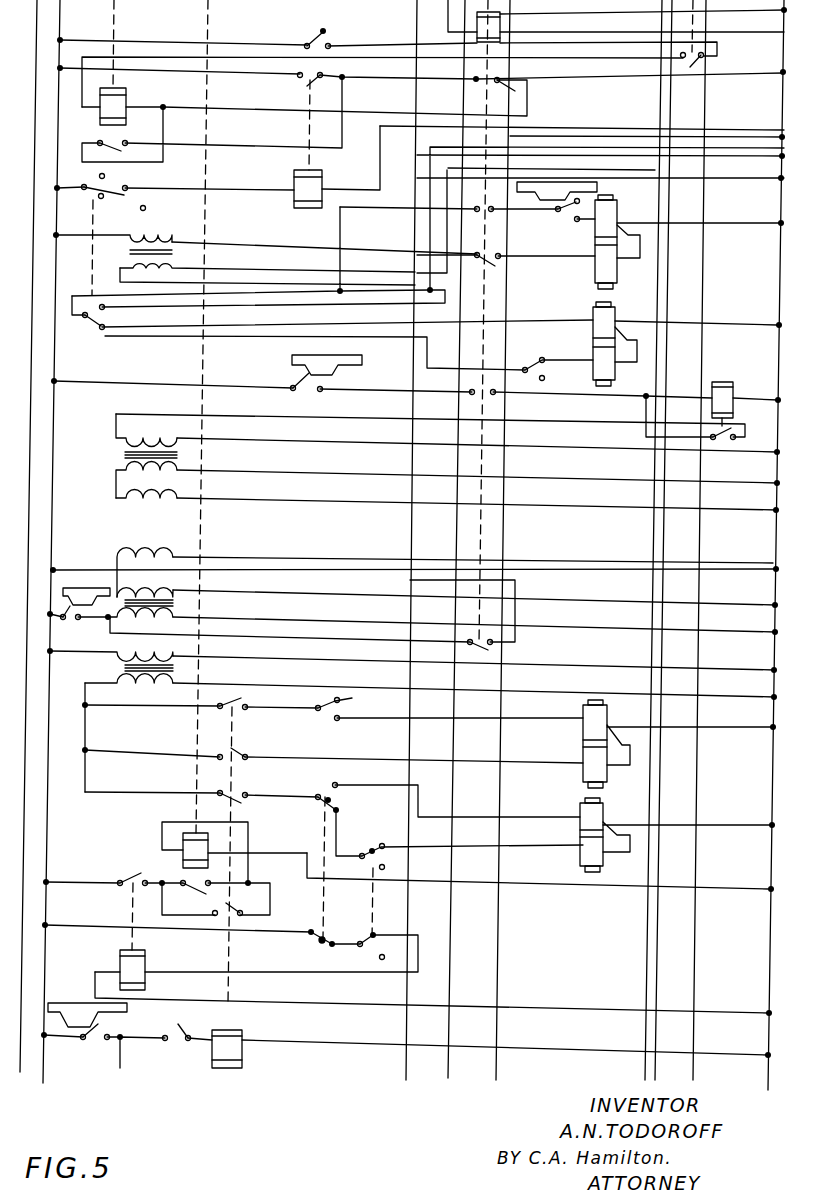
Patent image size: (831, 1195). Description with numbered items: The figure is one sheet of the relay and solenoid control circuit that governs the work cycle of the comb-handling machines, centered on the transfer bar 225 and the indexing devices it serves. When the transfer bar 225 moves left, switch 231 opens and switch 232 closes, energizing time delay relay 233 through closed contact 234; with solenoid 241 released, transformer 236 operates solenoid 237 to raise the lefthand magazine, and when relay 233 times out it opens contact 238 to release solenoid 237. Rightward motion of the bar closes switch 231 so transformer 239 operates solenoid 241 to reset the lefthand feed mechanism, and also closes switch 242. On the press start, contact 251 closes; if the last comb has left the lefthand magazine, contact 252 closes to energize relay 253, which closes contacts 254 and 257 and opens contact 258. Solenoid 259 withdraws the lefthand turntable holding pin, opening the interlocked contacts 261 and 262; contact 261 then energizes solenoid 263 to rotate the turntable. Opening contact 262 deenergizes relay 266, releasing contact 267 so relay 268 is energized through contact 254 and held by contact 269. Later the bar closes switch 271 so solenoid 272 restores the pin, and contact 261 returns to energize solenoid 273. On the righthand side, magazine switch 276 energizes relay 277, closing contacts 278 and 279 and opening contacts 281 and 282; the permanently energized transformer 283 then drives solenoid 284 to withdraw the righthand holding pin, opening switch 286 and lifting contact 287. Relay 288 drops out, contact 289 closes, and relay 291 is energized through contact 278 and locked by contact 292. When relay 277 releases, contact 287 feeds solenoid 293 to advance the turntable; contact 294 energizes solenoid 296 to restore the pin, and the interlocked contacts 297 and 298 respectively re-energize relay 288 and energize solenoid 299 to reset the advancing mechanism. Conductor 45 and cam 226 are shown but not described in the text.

The supply conductor 45 is at (60, 22).
The contact 252 is at (322, 31).
The relay 253 is at (500, 22).
The contact 251 is at (691, 67).
The relay 268 is at (118, 104).
The contact 267 is at (308, 86).
The contact 269 is at (116, 141).
The contact 254 is at (515, 91).
The relay 266 is at (305, 184).
The contact 262 is at (91, 193).
The transfer bar 225 is at (556, 182).
The contact 258 is at (492, 211).
The switch 271 is at (560, 213).
The solenoid 272 is at (638, 190).
The solenoid 259 is at (600, 272).
The solenoid 263 is at (603, 322).
The contact 261 is at (92, 320).
The switch 232 is at (298, 384).
The contact 234 is at (470, 393).
The solenoid 273 is at (597, 369).
The time delay relay 233 is at (725, 392).
The contact 238 is at (733, 440).
The transformer 236 is at (177, 440).
The solenoid 237 is at (175, 472).
The solenoid 241 is at (173, 555).
The transformer 239 is at (173, 612).
The switch 231 is at (67, 621).
The contact 257 is at (490, 648).
The transformer 283 is at (173, 660).
The contact 281 is at (215, 708).
The contact 294 is at (337, 703).
The contact 279 is at (218, 755).
The contact 282 is at (218, 792).
The contact 287 is at (362, 805).
The contact 298 is at (380, 850).
The solenoid 296 is at (583, 719).
The solenoid 284 is at (583, 768).
The solenoid 293 is at (580, 820).
The solenoid 299 is at (580, 857).
The relay 291 is at (183, 853).
The contact 289 is at (122, 884).
The contact 292 is at (189, 895).
The contact 278 is at (241, 912).
The switch 286 is at (333, 940).
The contact 297 is at (380, 934).
The relay 288 is at (135, 978).
The cam 226 is at (127, 1012).
The switch 242 is at (88, 1039).
The magazine switch 276 is at (185, 1022).
The relay 277 is at (230, 1052).